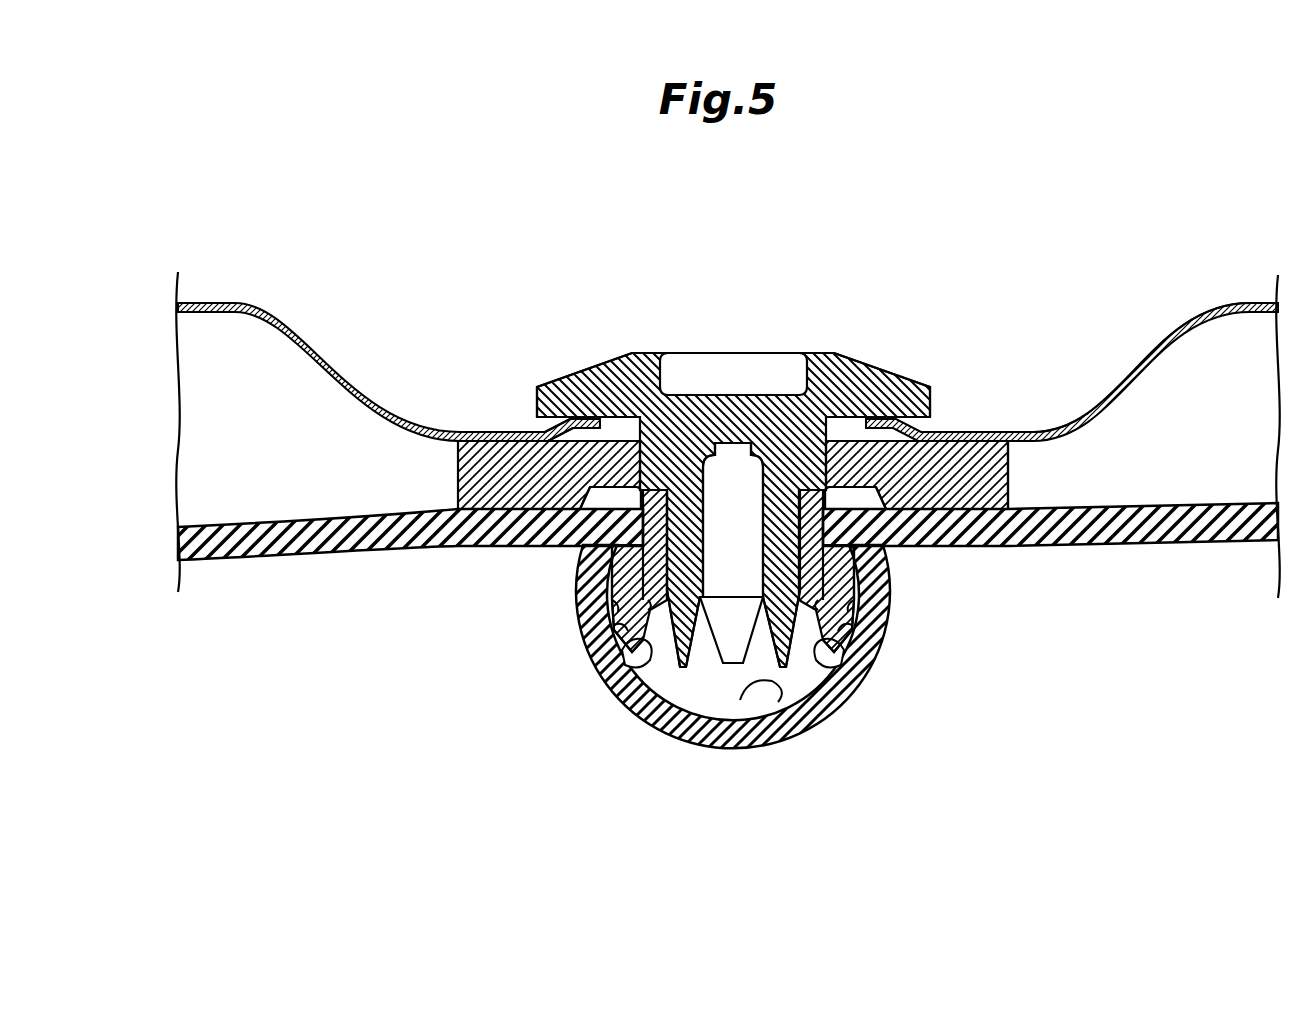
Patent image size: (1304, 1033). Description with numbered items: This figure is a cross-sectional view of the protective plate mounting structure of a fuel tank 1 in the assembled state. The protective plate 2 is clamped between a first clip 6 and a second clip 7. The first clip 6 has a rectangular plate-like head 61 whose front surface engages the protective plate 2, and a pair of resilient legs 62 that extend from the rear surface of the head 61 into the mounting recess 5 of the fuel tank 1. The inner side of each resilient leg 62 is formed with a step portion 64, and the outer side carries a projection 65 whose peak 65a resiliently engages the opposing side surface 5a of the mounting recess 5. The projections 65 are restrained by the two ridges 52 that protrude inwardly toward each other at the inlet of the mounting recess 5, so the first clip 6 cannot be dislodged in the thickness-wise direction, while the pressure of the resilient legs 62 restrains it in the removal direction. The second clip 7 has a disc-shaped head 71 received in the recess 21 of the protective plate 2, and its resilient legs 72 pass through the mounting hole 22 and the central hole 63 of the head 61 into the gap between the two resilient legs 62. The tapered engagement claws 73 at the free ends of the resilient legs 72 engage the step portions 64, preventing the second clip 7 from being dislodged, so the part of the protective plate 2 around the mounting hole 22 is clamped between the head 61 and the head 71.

The fuel tank 1 is at (267, 520).
The protective plate 2 is at (728, 354).
The recess 21 is at (1052, 392).
The mounting hole 22 is at (598, 412).
The mounting recess 5 is at (733, 672).
The side surface 5a is at (635, 650).
The first clip 6 is at (733, 497).
The head 61 is at (1010, 460).
The resilient legs 62 is at (628, 528).
The central hole 63 is at (667, 495).
The step portion 64 is at (650, 604).
The projection 65 is at (625, 626).
The peak 65a is at (613, 607).
The second clip 7 is at (747, 524).
The head 71 is at (880, 362).
The resilient legs 72 is at (745, 520).
The engagement claw 73 is at (670, 650).
The ridges 52 is at (632, 508).